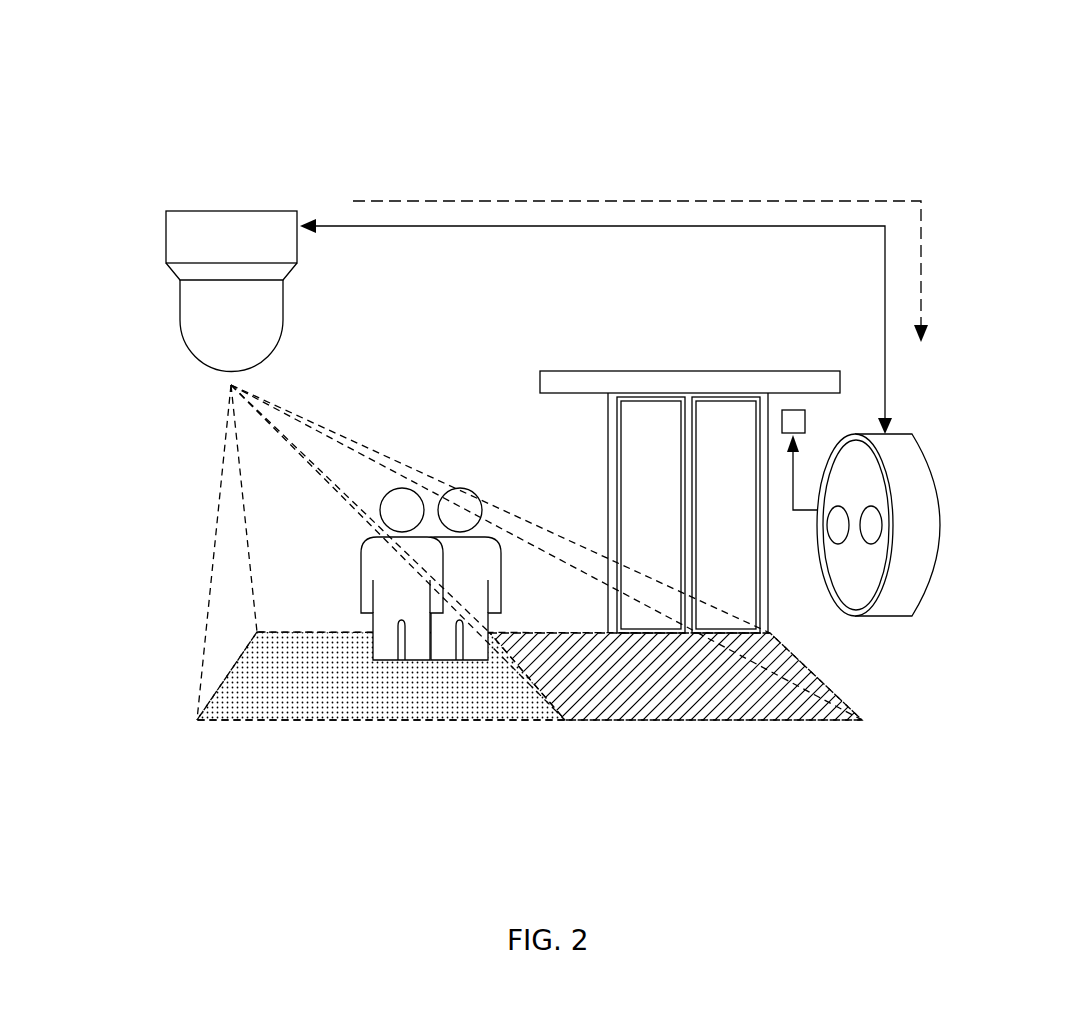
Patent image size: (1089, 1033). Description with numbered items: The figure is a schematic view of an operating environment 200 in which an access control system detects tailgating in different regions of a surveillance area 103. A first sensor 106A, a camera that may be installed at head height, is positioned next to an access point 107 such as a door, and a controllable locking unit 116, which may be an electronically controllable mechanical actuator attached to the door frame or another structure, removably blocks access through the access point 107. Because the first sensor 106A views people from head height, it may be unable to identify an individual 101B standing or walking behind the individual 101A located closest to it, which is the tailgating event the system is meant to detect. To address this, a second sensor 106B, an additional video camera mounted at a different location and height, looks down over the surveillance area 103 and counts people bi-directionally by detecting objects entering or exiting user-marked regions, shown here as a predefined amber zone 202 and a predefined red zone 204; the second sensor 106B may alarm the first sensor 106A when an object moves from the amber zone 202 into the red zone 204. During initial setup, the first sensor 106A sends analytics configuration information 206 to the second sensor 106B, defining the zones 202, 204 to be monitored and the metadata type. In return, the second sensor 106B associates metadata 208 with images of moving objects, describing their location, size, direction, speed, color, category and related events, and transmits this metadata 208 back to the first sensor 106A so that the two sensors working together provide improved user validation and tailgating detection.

The operating environment 200 is at (1003, 62).
The metadata 208 is at (438, 181).
The analytics configuration information 206 is at (708, 260).
The second sensor 106B is at (150, 243).
The first sensor 106A is at (938, 462).
The access point 107 is at (648, 370).
The controllable locking unit 116 is at (824, 417).
The individual 101A is at (465, 483).
The individual 101B is at (394, 483).
The amber zone 202 is at (417, 722).
The red zone 204 is at (764, 722).
The floor / monitored area 103 is at (577, 768).